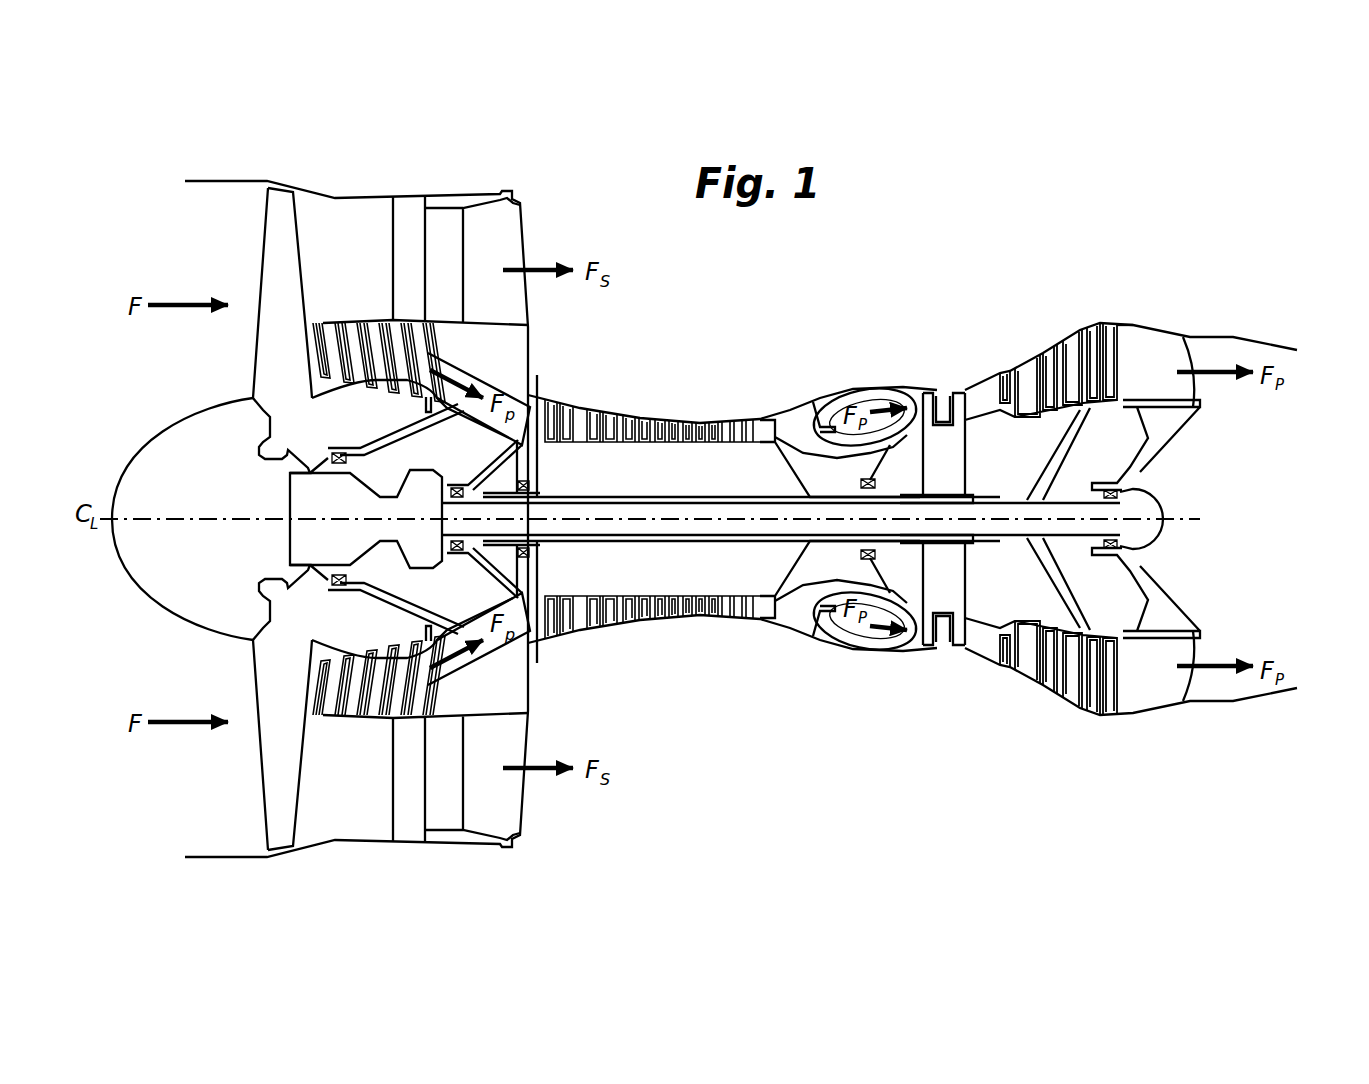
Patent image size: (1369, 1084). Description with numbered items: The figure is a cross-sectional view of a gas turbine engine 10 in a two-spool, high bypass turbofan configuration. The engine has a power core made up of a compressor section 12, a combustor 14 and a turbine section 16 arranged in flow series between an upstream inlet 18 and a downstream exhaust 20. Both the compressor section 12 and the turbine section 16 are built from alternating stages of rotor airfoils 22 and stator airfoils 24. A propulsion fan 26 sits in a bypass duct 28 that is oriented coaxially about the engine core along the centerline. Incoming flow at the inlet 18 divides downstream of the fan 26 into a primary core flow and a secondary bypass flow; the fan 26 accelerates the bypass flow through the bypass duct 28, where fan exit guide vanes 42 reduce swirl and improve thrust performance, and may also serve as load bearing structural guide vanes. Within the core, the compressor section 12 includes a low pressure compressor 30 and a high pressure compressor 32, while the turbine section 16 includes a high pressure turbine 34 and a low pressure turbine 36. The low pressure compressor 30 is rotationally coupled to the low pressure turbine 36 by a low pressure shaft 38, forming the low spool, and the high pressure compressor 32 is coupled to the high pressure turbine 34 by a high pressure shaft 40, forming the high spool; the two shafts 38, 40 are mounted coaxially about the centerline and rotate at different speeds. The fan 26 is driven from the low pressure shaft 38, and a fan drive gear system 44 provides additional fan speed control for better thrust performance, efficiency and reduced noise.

The gas turbine engine 10 is at (156, 156).
The compressor section 12 is at (768, 865).
The combustor 14 is at (867, 392).
The turbine section 16 is at (1130, 752).
The upstream inlet 18 is at (170, 401).
The downstream exhaust 20 is at (1242, 469).
The rotor airfoils 22 is at (582, 420).
The stator airfoils 24 is at (618, 420).
The propulsion fan 26 is at (276, 267).
The bypass duct 28 is at (368, 267).
The low pressure compressor 30 is at (477, 675).
The high pressure compressor 32 is at (667, 627).
The high pressure turbine 34 is at (952, 659).
The low pressure turbine 36 is at (1025, 696).
The low pressure shaft 38 is at (700, 527).
The high pressure shaft 40 is at (782, 547).
The fan exit guide vanes 42 is at (407, 217).
The fan drive gear system 44 is at (427, 463).